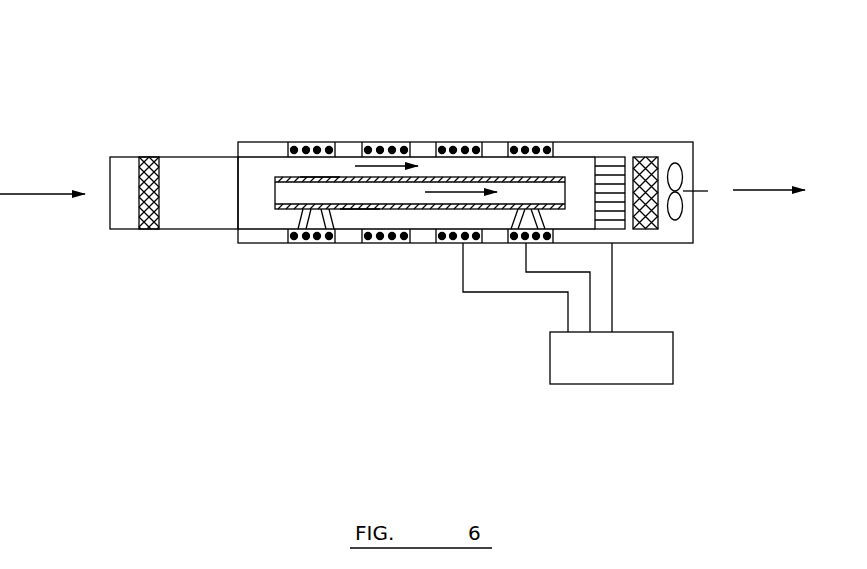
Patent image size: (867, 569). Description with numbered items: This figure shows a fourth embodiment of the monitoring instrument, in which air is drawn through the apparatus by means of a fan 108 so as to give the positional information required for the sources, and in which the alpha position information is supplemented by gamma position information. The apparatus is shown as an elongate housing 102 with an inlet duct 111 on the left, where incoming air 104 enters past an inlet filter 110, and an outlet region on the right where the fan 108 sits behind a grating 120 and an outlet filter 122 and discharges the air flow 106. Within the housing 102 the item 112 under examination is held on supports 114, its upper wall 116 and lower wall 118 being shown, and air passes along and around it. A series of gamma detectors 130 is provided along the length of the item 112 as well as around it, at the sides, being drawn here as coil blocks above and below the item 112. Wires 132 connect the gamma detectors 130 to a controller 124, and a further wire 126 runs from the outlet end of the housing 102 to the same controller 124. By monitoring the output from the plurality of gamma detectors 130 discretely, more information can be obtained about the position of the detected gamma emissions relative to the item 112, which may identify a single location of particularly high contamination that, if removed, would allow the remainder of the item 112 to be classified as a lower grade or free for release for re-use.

The heater housing 102 is at (462, 127).
The air inlet flow 104 is at (103, 146).
The air outlet flow 106 is at (703, 149).
The fan 108 is at (678, 203).
The inlet filter 110 is at (147, 226).
The inlet duct 111 is at (193, 143).
The item 112 is at (484, 168).
The tube supports 114 is at (320, 224).
The tube upper wall 116 is at (318, 176).
The tube lower wall 118 is at (355, 204).
The grating 120 is at (610, 128).
The outlet filter 122 is at (650, 160).
The controller 124 is at (612, 358).
The fan control wire 126 is at (613, 280).
The gamma detectors 130 is at (452, 148).
The heater wires 132 is at (587, 308).